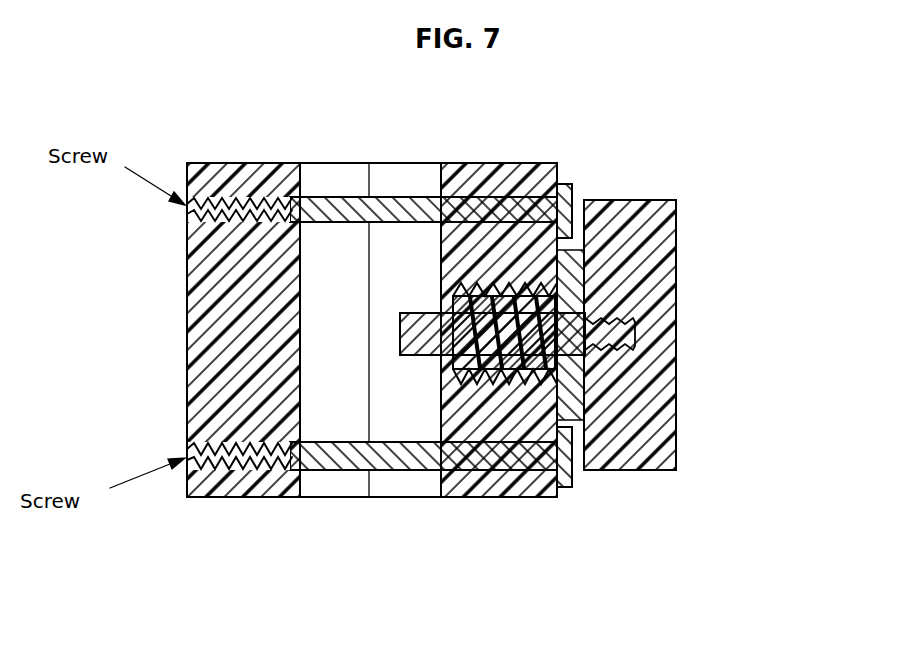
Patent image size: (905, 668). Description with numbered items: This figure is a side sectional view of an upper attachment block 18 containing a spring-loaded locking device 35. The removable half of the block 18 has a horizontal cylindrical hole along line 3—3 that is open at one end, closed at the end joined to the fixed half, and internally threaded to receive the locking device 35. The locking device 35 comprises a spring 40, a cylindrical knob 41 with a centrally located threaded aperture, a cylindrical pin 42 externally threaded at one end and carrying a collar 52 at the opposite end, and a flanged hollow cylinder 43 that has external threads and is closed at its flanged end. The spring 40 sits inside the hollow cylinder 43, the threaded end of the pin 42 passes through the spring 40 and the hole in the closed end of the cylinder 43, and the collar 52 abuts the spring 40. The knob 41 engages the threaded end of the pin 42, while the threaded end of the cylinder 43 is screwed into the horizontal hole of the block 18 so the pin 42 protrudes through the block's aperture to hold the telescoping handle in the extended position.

The line 3— 3 is at (175, 330).
The attachment block 18 is at (227, 523).
The spring-loaded locking device 35 is at (734, 296).
The spring 40 is at (571, 376).
The cylindrical knob 41 is at (689, 189).
The cylindrical pin 42 is at (385, 311).
The flanged hollow cylinder 43 is at (585, 434).
The collar 52 is at (440, 376).